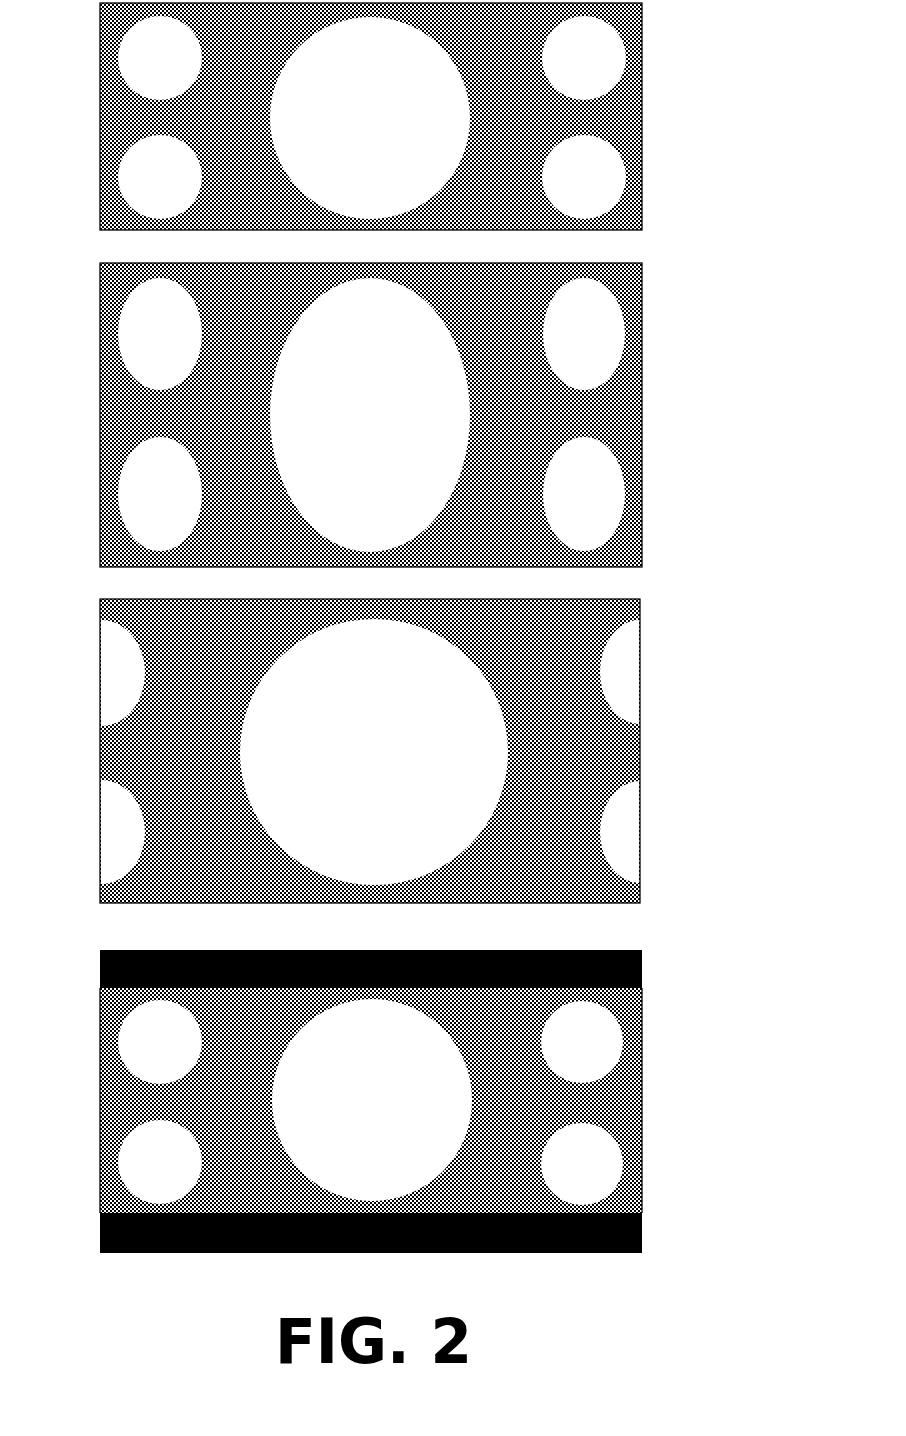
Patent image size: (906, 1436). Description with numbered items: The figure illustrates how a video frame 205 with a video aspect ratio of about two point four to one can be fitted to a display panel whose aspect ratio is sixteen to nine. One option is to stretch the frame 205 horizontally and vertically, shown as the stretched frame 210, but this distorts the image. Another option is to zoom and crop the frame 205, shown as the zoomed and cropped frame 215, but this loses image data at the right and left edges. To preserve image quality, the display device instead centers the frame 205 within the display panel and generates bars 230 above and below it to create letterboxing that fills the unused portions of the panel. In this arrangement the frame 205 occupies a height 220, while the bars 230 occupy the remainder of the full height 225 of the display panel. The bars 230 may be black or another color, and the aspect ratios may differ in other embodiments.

The frame 205 is at (100, 124).
The stretched frame 210 is at (100, 396).
The zoomed and cropped frame 215 is at (100, 768).
The height 220 is at (405, 1102).
The height of the display panel 225 is at (411, 1086).
The bars 230 is at (100, 965).